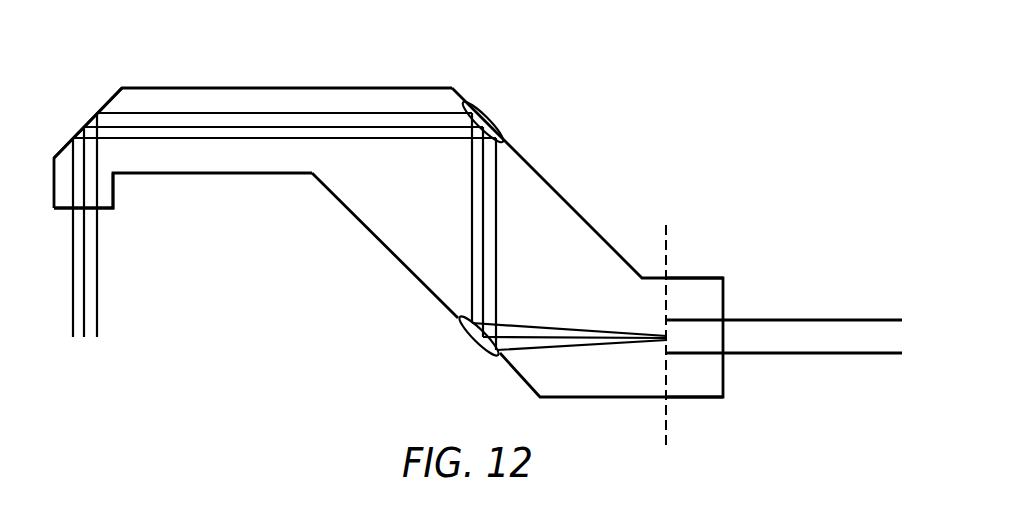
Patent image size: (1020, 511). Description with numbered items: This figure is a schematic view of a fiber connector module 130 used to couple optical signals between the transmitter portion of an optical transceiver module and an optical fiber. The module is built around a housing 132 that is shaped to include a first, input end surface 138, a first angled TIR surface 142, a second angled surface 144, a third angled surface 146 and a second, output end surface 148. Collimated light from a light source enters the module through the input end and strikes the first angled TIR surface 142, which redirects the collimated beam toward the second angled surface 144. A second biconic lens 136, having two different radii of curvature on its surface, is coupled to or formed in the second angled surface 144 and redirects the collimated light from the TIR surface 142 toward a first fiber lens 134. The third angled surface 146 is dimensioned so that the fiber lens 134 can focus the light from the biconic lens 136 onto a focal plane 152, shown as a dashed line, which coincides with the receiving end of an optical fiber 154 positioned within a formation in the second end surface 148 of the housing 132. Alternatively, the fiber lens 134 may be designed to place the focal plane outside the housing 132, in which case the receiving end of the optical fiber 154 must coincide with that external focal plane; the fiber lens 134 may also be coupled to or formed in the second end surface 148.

The fiber connector module 130 is at (517, 62).
The housing 132 is at (383, 205).
The first fiber lens 134 is at (470, 338).
The second biconic lens 136 is at (491, 118).
The first end surface 138 is at (100, 209).
The first angled TIR surface 142 is at (113, 95).
The second angled surface 144 is at (527, 163).
The third angled surface 146 is at (517, 372).
The second end surface 148 is at (724, 380).
The focal plane 152 is at (668, 252).
The optical fiber 154 is at (773, 334).